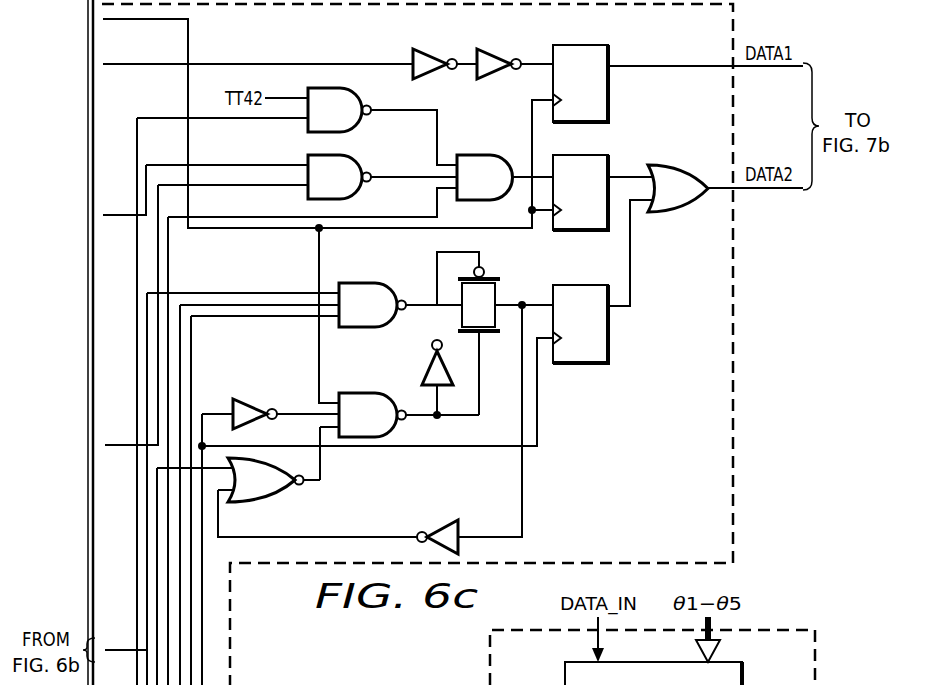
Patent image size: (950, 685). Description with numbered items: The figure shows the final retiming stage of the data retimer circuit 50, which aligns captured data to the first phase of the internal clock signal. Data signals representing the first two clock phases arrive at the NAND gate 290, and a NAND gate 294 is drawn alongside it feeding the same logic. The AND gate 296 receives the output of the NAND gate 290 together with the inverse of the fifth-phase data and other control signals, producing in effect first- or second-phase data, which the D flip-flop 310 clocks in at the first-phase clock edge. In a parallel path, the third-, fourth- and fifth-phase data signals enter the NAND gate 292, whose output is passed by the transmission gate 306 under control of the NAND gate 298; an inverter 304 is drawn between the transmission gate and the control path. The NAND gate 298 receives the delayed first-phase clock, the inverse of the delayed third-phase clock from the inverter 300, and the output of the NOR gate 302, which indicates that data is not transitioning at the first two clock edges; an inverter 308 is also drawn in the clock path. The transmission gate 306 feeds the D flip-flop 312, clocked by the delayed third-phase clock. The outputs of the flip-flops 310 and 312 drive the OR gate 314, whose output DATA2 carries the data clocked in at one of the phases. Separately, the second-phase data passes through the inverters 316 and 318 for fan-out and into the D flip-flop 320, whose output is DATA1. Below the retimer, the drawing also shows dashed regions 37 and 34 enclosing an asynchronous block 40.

The inverter 316 is at (431, 57).
The inverter 318 is at (494, 57).
The D flip-flop 320 is at (609, 92).
The D flip-flop 310 is at (586, 149).
The D flip-flop 312 is at (609, 328).
The OR gate 314 is at (672, 213).
The NAND gate 294 is at (372, 130).
The NAND gate 290 is at (372, 195).
The AND gate 296 is at (484, 154).
The NAND gate 292 is at (349, 283).
The transmission gate 306 is at (500, 295).
The inverter 304 is at (428, 349).
The NAND gate 298 is at (349, 393).
The inverter 300 is at (270, 386).
The NOR gate 302 is at (240, 505).
The inverter 308 is at (431, 527).
The data retimer circuit 50 is at (734, 270).
The clock generator block 37 is at (242, 601).
The asynchronous input block 34 is at (854, 614).
The asynchronous counter 40 is at (750, 684).